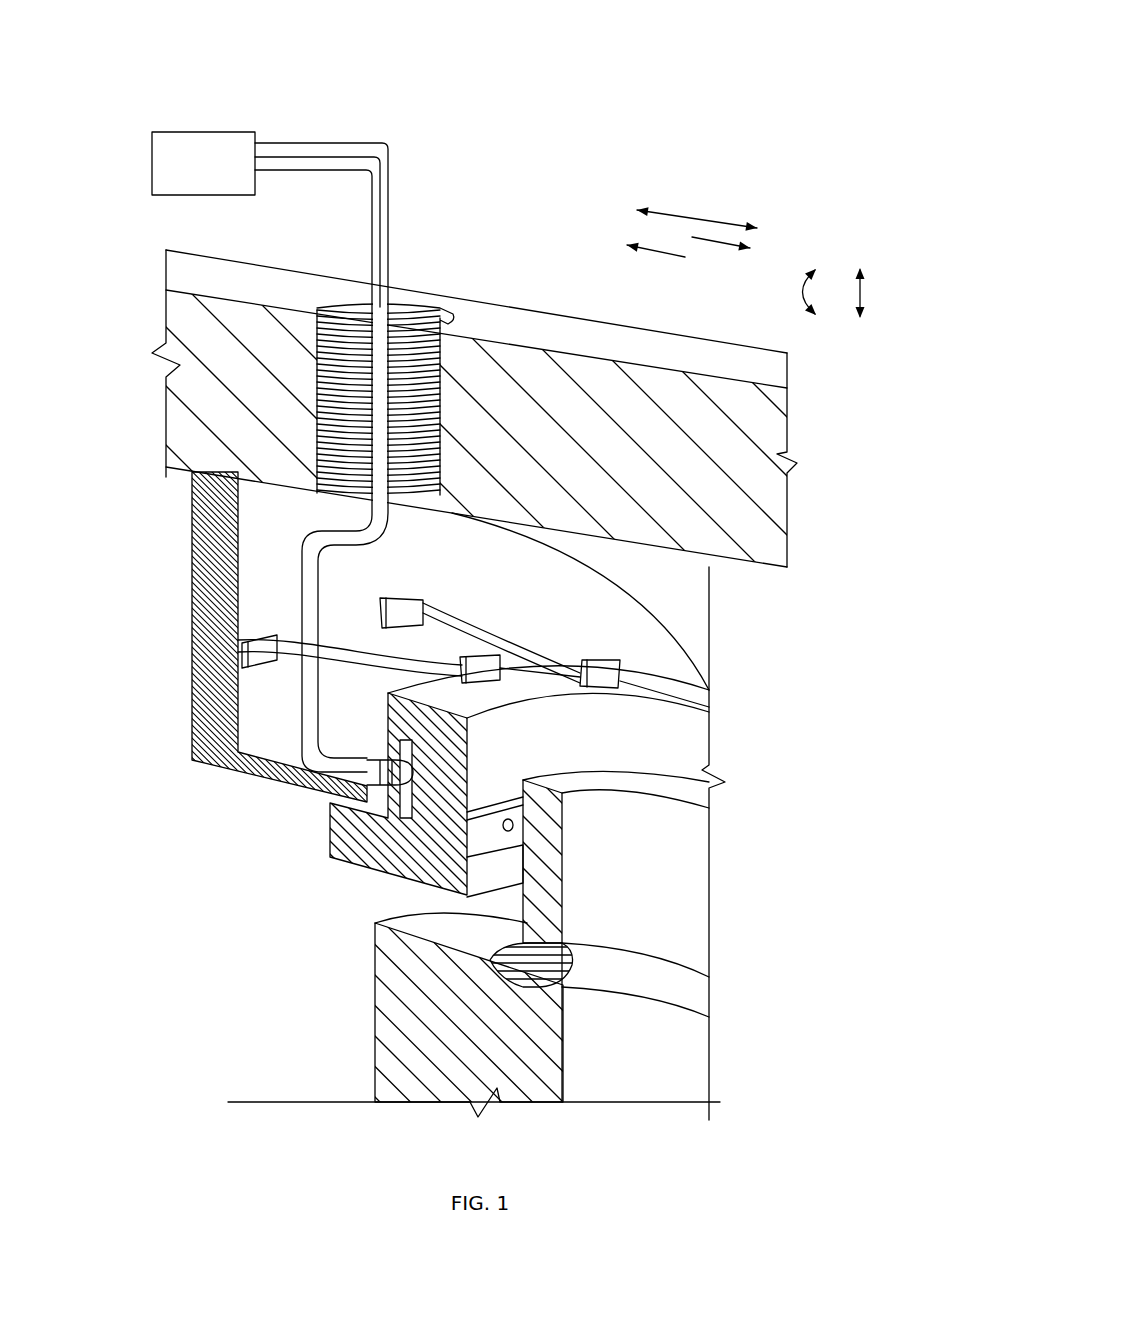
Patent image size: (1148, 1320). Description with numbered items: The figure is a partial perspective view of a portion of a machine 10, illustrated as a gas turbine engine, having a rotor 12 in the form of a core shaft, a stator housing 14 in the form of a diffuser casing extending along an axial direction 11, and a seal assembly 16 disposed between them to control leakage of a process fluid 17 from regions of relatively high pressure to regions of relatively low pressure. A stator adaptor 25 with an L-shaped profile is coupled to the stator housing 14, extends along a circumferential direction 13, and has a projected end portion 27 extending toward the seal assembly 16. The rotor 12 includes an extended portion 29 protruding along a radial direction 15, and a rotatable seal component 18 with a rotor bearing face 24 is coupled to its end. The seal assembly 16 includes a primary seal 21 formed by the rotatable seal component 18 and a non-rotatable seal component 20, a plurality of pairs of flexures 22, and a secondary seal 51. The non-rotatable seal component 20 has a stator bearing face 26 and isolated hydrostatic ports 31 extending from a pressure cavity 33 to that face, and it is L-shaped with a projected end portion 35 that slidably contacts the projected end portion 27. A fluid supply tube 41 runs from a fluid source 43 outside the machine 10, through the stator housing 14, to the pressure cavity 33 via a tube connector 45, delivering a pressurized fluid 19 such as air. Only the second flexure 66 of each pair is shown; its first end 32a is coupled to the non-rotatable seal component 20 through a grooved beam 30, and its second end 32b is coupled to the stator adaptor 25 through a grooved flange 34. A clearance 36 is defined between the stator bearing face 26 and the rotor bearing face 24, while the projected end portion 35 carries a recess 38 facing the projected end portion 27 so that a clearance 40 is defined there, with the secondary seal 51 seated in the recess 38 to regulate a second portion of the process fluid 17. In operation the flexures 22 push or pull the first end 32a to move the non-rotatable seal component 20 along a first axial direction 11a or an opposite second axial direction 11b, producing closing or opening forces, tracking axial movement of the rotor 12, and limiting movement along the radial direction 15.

The machine 10 is at (716, 73).
The axial direction 11 is at (702, 214).
The first axial direction 11a is at (712, 250).
The second axial direction 11b is at (656, 260).
The rotor 12 is at (375, 1053).
The circumferential direction 13 is at (795, 294).
The stator housing 14 is at (780, 432).
The radial direction 15 is at (857, 290).
The seal assembly 16 is at (332, 905).
The process fluid 17 is at (642, 740).
The rotatable seal component 18 is at (702, 896).
The pressurized fluid 19 is at (308, 680).
The non-rotatable seal component 20 is at (710, 822).
The primary seal 21 is at (752, 875).
The plurality of pairs of flexures 22 is at (410, 638).
The rotor bearing face 24 is at (402, 998).
The stator adaptor 25 is at (190, 578).
The stator bearing face 26 is at (533, 822).
The projected end portion 27 is at (257, 720).
The extended portion 29 is at (563, 968).
The grooved beam 30 is at (483, 655).
The isolated hydrostatic ports 31 is at (508, 833).
The first end of the second flexure 32a is at (576, 660).
The second end of the second flexure 32b is at (266, 636).
The pressure cavity 33 is at (461, 806).
The grooved flange 34 is at (388, 598).
The projected end portion 35 is at (333, 900).
The clearance 36 is at (515, 787).
The recess 38 is at (345, 797).
The clearance 40 is at (300, 799).
The fluid supply tube 41 is at (389, 214).
The fluid source 43 is at (205, 131).
The tube connector 45 is at (371, 757).
The secondary seal 51 is at (330, 860).
The second flexure 66 is at (325, 652).